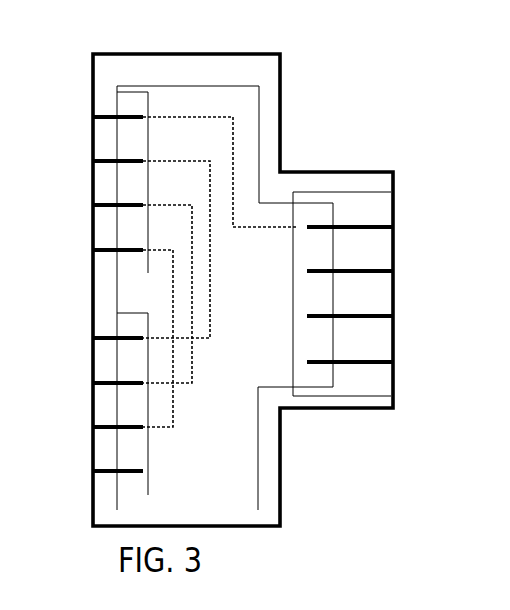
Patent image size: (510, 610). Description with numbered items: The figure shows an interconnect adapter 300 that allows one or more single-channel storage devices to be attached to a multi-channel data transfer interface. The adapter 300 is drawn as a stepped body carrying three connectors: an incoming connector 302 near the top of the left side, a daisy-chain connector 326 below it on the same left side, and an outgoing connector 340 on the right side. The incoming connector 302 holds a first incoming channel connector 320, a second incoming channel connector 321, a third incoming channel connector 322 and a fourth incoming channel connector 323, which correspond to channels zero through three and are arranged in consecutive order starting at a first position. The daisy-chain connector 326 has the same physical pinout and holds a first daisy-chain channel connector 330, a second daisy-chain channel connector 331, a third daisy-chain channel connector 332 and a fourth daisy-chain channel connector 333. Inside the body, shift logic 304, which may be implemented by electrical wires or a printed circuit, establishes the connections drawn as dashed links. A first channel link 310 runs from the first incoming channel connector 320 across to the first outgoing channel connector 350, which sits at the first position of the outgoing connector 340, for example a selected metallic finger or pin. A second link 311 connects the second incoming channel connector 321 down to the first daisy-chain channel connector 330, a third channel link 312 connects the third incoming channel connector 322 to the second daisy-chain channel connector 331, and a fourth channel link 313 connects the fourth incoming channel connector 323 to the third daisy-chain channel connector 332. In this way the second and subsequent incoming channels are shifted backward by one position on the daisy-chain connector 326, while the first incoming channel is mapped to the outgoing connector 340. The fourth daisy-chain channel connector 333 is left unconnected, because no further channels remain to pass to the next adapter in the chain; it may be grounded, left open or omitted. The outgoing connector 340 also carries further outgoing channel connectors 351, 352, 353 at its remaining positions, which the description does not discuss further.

The interconnect adapter 300 is at (143, 53).
The incoming connector 302 is at (105, 102).
The shift logic 304 is at (207, 86).
The first channel link 310 is at (232, 130).
The second link 311 is at (212, 278).
The third channel link 312 is at (196, 374).
The fourth channel link 313 is at (175, 423).
The first incoming channel connector 320 is at (92, 116).
The second incoming channel connector 321 is at (92, 160).
The third incoming channel connector 322 is at (92, 204).
The fourth incoming channel connector 323 is at (92, 249).
The daisy-chain connector 326 is at (102, 323).
The first daisy-chain channel connector 330 is at (92, 337).
The second daisy-chain channel connector 331 is at (92, 382).
The third daisy-chain channel connector 332 is at (92, 426).
The fourth daisy-chain channel connector 333 is at (92, 470).
The outgoing connector 340 is at (382, 203).
The first outgoing channel connector 350 is at (394, 227).
The terminal 1 of third group 351 is at (394, 271).
The terminal 2 of third group 352 is at (394, 316).
The terminal 3 of third group 353 is at (394, 361).